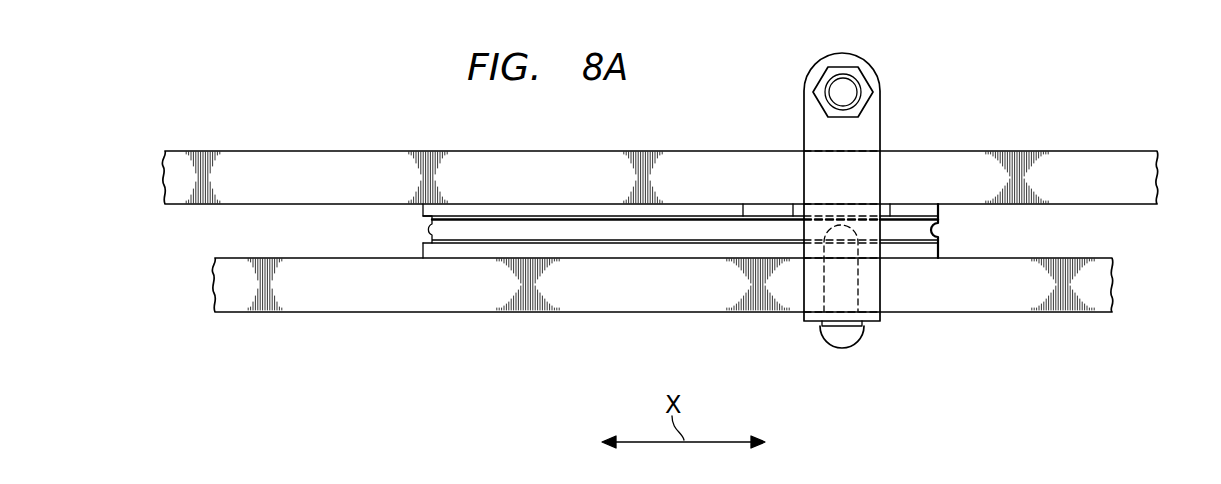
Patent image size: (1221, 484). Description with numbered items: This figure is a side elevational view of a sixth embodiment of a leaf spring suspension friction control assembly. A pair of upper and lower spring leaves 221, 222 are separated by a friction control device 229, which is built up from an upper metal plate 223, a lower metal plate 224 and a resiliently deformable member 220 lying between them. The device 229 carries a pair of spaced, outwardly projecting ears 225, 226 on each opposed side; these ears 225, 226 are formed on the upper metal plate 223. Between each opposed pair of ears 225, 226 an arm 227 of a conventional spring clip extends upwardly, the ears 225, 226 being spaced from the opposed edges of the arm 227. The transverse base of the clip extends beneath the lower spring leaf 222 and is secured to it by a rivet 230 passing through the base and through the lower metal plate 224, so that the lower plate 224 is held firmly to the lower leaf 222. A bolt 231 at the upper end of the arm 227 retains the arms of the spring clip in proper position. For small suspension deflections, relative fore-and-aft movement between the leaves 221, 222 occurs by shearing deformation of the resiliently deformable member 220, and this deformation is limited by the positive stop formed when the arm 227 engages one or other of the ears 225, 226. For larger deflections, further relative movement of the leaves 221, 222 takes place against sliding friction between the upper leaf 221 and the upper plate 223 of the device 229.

The resiliently deformable member 220 is at (442, 233).
The upper spring leaf 221 is at (363, 151).
The lower spring leaf 222 is at (425, 312).
The upper metal plate 223 is at (541, 212).
The lower metal plate 224 is at (627, 250).
The ear 225 is at (761, 210).
The ear 226 is at (922, 210).
The arm of spring clip 227 is at (804, 97).
The friction control device 229 is at (1095, 228).
The rivet 230 is at (852, 280).
The bolt 231 is at (838, 80).